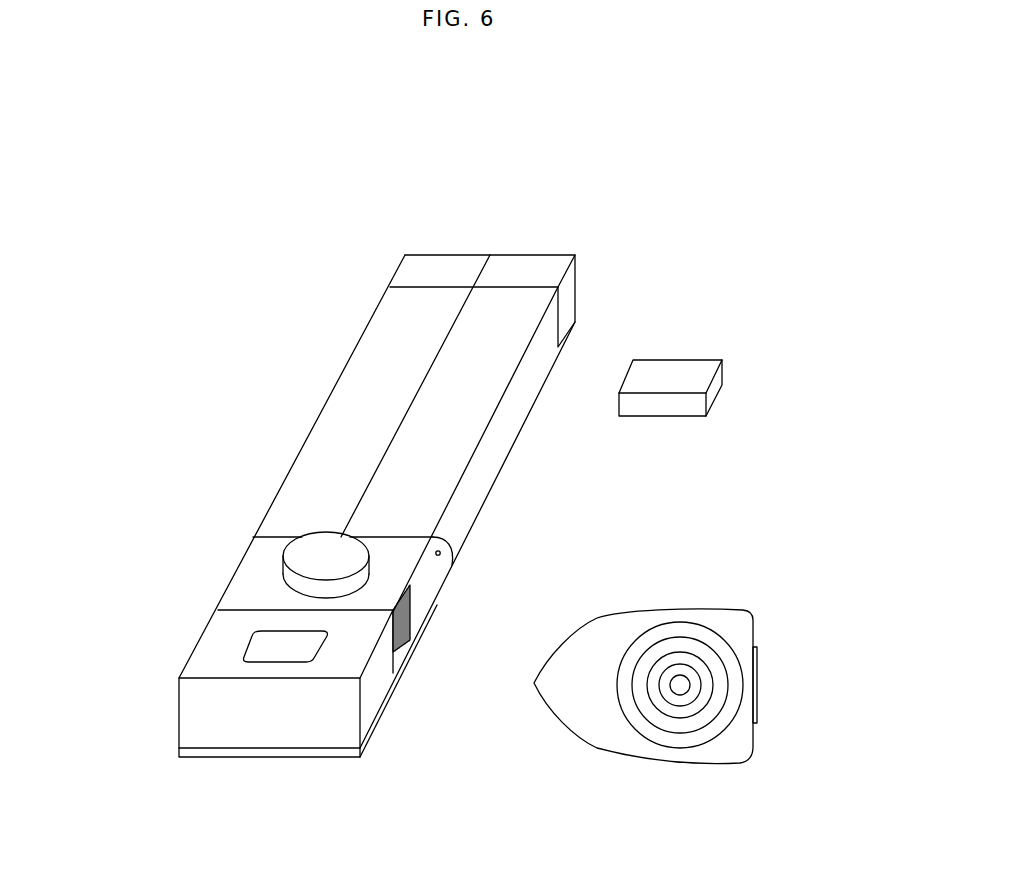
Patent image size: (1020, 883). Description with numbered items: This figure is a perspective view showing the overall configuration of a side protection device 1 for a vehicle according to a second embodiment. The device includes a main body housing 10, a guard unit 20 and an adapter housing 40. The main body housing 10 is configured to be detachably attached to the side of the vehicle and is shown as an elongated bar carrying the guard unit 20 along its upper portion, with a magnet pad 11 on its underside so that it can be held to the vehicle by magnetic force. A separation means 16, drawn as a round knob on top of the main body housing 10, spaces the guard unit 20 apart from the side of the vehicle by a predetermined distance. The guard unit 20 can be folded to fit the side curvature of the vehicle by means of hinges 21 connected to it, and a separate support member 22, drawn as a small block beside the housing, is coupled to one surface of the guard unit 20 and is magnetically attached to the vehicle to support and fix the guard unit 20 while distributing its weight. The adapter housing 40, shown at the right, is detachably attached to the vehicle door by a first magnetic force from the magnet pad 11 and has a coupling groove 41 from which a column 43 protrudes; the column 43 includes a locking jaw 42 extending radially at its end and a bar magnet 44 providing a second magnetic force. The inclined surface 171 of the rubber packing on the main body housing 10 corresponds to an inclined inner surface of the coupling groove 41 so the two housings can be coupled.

The side protection device 1 is at (520, 146).
The main body housing 10 is at (195, 635).
The magnet pad 11 is at (178, 757).
The separation means 16 is at (313, 552).
The guard unit 20 is at (352, 337).
The hinge 21 is at (441, 553).
The support member 22 is at (707, 348).
The adapter housing 40 is at (602, 602).
The coupling groove 41 is at (724, 697).
The locking jaw 42 is at (708, 656).
The column 43 is at (777, 556).
The bar magnet 44 is at (683, 676).
The inclined surface 171 is at (672, 621).